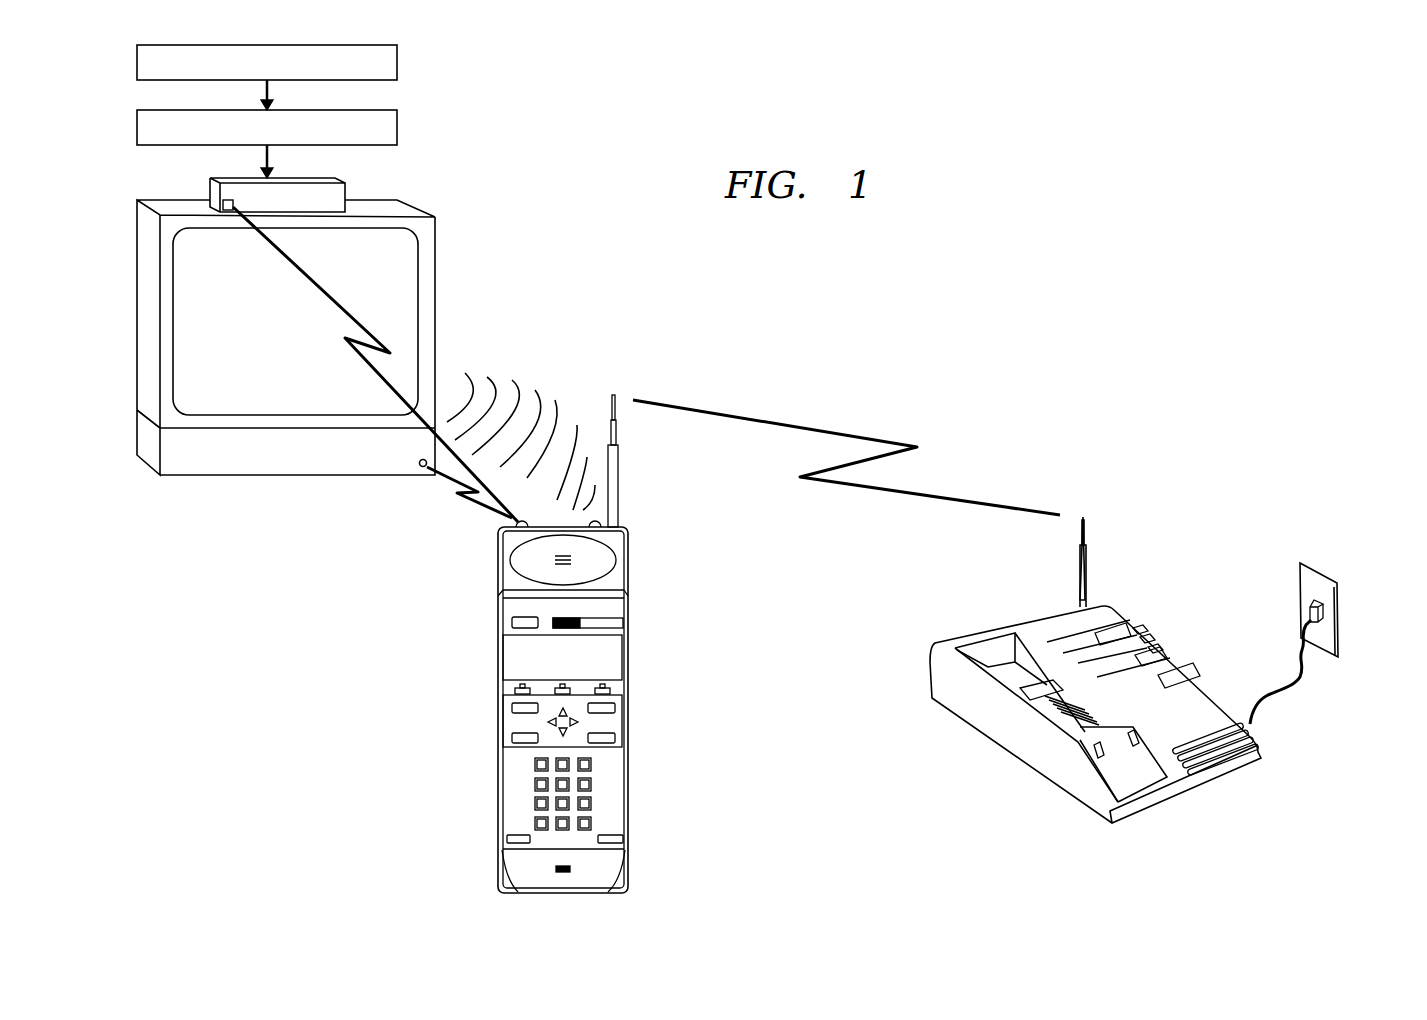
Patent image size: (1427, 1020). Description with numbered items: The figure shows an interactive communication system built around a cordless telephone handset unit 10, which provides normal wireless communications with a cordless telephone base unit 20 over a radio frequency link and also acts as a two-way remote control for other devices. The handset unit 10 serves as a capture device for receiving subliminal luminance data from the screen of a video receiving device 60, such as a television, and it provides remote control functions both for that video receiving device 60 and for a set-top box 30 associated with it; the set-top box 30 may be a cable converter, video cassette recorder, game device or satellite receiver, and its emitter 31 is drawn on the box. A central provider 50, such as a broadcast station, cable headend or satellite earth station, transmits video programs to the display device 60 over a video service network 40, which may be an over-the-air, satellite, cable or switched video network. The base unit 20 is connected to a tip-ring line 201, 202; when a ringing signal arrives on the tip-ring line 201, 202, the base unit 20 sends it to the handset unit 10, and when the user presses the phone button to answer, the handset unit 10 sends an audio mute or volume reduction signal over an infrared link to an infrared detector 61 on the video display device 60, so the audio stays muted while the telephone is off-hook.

The handset unit 10 is at (628, 604).
The base unit 20 is at (1118, 612).
The set-top box 30 is at (347, 188).
The infrared transmitter of set-top box 31 is at (212, 197).
The video service network 40 is at (397, 124).
The central provider 50 is at (397, 63).
The video receiving device 60 is at (433, 322).
The infrared detector 61 is at (405, 472).
The tip-ring line 201 is at (1346, 640).
The tip-ring line 202 is at (1297, 677).